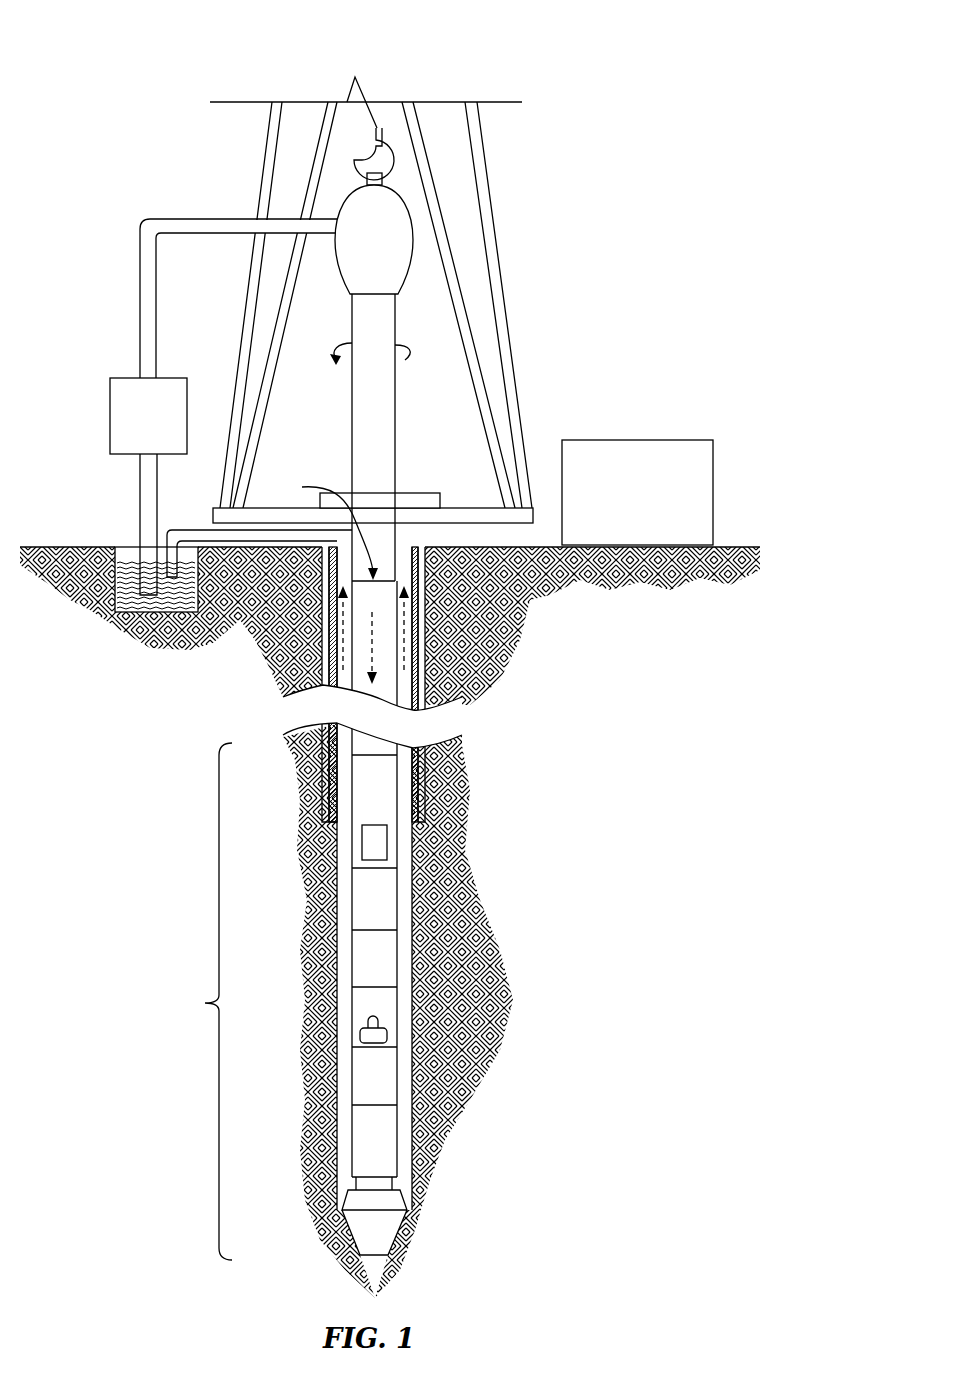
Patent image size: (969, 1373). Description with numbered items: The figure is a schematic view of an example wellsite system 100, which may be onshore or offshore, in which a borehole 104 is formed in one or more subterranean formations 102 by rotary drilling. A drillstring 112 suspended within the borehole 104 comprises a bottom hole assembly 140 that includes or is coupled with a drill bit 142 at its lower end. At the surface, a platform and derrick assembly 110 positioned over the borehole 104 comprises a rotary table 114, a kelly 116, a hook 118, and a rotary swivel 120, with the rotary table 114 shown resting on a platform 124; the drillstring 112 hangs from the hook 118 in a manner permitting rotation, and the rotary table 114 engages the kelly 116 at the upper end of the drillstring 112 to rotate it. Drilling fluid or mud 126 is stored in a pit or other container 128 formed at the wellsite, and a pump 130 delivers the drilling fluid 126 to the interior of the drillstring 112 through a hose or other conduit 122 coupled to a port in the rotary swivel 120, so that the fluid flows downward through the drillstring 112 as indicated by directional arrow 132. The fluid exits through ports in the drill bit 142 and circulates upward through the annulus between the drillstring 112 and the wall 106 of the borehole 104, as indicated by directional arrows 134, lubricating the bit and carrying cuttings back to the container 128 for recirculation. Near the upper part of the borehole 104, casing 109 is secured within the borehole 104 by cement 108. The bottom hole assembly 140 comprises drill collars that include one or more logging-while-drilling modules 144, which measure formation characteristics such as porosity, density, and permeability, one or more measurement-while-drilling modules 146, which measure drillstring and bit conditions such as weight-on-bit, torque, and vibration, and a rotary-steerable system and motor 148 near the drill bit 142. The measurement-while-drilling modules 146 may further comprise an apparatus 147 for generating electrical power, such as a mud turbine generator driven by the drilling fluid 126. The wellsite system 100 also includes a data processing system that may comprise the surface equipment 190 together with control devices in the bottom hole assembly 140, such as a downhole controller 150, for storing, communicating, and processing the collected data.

The wellsite system 100 is at (90, 56).
The subterranean formation 102 is at (466, 1009).
The borehole 104 is at (407, 688).
The wall of the borehole 106 is at (405, 884).
The cement 108 is at (325, 800).
The casing 109 is at (420, 800).
The platform and derrick assembly 110 is at (545, 258).
The drillstring 112 is at (319, 526).
The rotary table 114 is at (403, 490).
The kelly 116 is at (352, 427).
The hook 118 is at (378, 126).
The rotary swivel 120 is at (335, 262).
The hose or other conduit 122 is at (140, 330).
The rig floor / platform 124 is at (477, 507).
The drilling fluid or mud 126 is at (127, 603).
The pit or other container 128 is at (128, 540).
The pump 130 is at (110, 418).
The directional arrow 132 is at (373, 657).
The directional arrows 134 is at (342, 615).
The bottom hole assembly 140 is at (203, 1003).
The drill bit 142 is at (362, 1229).
The logging-while-drilling module 144 is at (366, 900).
The measurement-while-drilling module 146 is at (366, 1000).
The apparatus for generating electrical power 147 is at (387, 1036).
The rotary-steerable system and motor 148 is at (366, 1129).
The downhole controller 150 is at (387, 843).
The surface equipment 190 is at (638, 440).